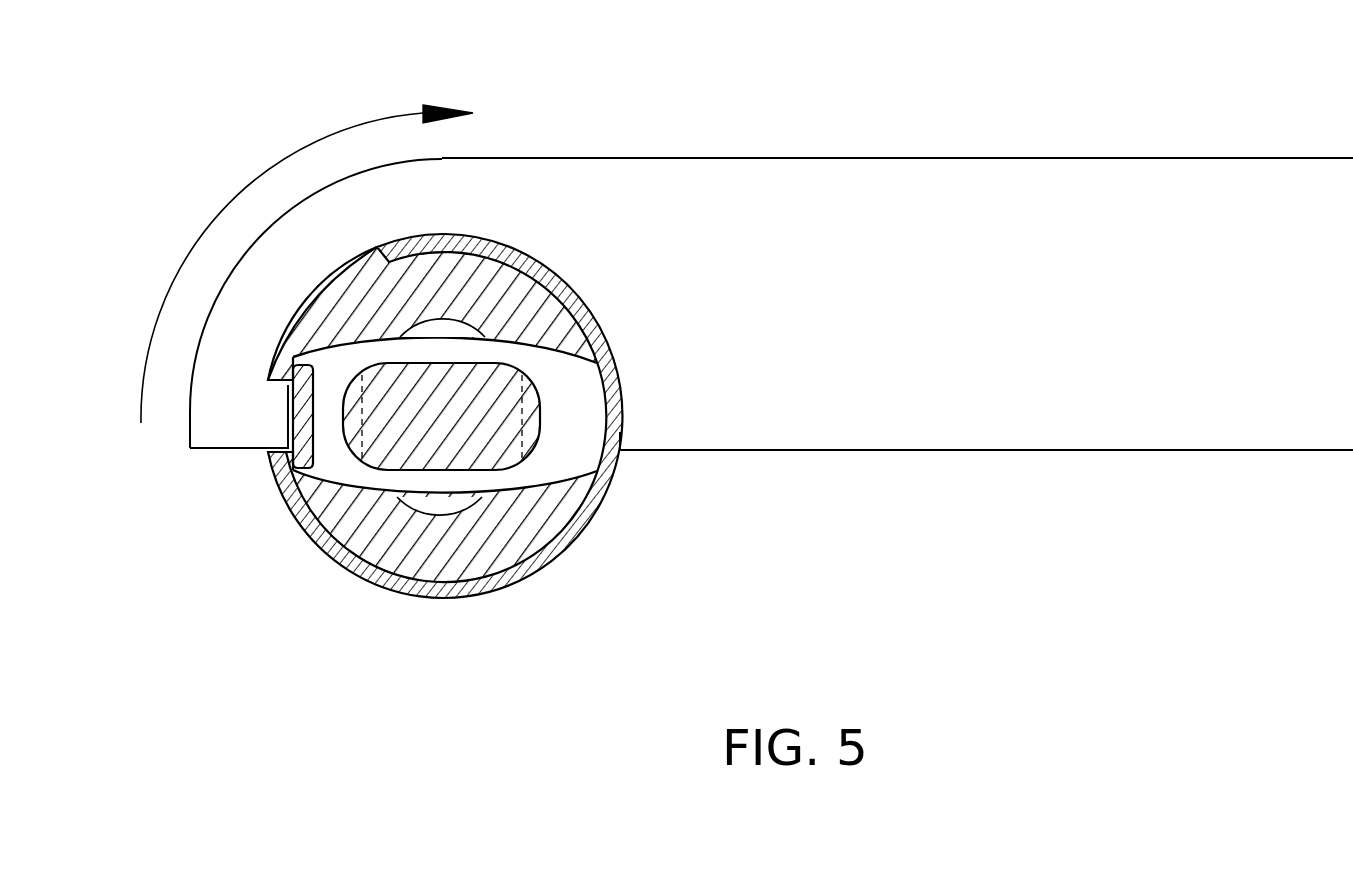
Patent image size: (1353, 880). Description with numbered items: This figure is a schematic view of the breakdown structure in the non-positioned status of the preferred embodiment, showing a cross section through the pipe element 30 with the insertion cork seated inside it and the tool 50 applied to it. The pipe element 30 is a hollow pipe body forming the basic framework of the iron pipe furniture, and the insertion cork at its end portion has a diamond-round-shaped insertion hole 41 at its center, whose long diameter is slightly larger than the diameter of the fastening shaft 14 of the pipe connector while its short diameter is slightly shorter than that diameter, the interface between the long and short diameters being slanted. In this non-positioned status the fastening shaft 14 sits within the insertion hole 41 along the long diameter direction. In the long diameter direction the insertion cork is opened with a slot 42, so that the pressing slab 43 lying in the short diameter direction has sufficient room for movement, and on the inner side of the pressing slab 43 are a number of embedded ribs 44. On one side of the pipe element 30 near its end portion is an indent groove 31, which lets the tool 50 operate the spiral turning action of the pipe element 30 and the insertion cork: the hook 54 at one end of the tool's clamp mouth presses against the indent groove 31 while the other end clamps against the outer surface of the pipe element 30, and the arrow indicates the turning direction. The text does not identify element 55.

The fastening shaft 14 is at (430, 425).
The pipe element 30 is at (583, 300).
The indent groove 31 is at (265, 452).
The insertion hole 41 is at (542, 455).
The slot 42 is at (567, 423).
The pressing slab 43 is at (517, 300).
The embedded ribs 44 is at (430, 328).
The tool 50 is at (1101, 197).
The hook 54 is at (282, 410).
The stop edge 55 is at (622, 433).